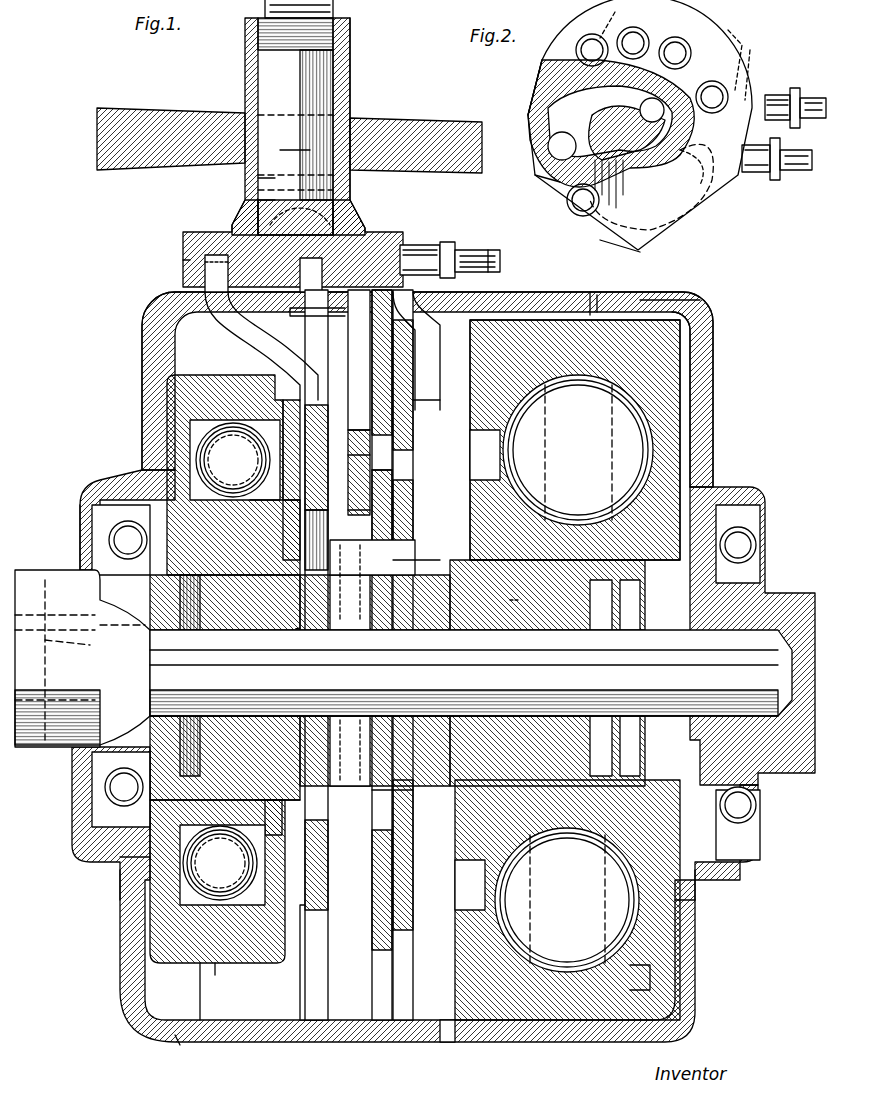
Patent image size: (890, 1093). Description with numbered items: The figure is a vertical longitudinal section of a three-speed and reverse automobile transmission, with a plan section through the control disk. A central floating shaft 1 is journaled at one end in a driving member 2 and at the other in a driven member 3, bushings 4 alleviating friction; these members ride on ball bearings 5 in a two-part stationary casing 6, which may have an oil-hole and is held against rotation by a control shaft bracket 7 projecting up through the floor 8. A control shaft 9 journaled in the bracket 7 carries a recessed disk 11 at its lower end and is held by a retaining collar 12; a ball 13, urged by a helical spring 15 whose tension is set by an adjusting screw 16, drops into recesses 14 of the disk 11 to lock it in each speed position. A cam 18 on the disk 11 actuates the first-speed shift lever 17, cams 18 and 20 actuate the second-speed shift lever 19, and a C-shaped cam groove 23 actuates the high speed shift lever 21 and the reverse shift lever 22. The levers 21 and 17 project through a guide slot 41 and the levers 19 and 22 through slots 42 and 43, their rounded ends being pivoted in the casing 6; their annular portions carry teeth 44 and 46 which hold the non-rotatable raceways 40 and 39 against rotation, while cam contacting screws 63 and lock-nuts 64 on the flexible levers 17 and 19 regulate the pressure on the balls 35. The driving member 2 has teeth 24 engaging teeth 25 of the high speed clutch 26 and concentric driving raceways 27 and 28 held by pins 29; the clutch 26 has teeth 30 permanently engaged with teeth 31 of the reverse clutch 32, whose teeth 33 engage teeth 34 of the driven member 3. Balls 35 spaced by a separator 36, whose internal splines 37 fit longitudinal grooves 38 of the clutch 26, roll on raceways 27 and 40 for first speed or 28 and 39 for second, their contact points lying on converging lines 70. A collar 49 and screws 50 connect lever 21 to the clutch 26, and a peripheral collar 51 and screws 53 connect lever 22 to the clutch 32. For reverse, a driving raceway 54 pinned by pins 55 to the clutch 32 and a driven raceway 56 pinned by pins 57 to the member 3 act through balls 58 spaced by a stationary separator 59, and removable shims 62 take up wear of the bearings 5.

In FIG. 1, the central floating shaft 1 is at (471, 673).
In FIG. 1, the driving member 2 is at (175, 252).
In FIG. 1, the driven member 3 is at (160, 400).
In FIG. 1, the bushings 4 is at (597, 265).
In FIG. 1, the ball bearings 5 is at (130, 485).
In FIG. 1, the two-part stationary casing 6 is at (145, 335).
In FIG. 1, the control shaft bracket 7 is at (350, 92).
In FIG. 1, the floor 8 is at (289, 130).
In FIG. 1, the control shaft 9 is at (270, 90).
In FIG. 1, the recessed disk 11 is at (183, 240).
In FIG. 2, the recessed disk 11 is at (725, 200).
In FIG. 1, the retaining collar 12 is at (352, 50).
In FIG. 1, the ball 13 is at (355, 215).
In FIG. 2, the recesses 14 is at (678, 37).
In FIG. 1, the helical spring 15 is at (240, 202).
In FIG. 1, the adjusting screw 16 is at (258, 180).
In FIG. 1, the first-speed shift lever 17 is at (462, 245).
In FIG. 2, the first-speed shift lever 17 is at (772, 95).
In FIG. 1, the cam 18 is at (405, 250).
In FIG. 2, the cam 18 is at (755, 90).
In FIG. 1, the second-speed shift lever 19 is at (428, 245).
In FIG. 2, the second-speed shift lever 19 is at (757, 175).
In FIG. 2, the cam 20 is at (620, 258).
In FIG. 1, the high speed shift lever 21 is at (370, 250).
In FIG. 2, the high speed shift lever 21 is at (560, 60).
In FIG. 1, the reverse shift lever 22 is at (195, 290).
In FIG. 2, the reverse shift lever 22 is at (545, 175).
In FIG. 1, the C-shaped cam groove 23 is at (360, 232).
In FIG. 2, the C-shaped cam groove 23 is at (550, 120).
In FIG. 1, the teeth 24 is at (698, 928).
In FIG. 1, the teeth 25 is at (547, 673).
In FIG. 1, the high speed clutch 26 is at (522, 628).
In FIG. 1, the driving ball raceway 27 is at (700, 897).
In FIG. 1, the driving ball raceway 28 is at (665, 300).
In FIG. 1, the pins 29 is at (700, 345).
In FIG. 1, the teeth 30 is at (352, 560).
In FIG. 1, the teeth 31 is at (280, 680).
In FIG. 1, the reverse clutch 32 is at (290, 820).
In FIG. 1, the teeth 33 is at (220, 640).
In FIG. 1, the teeth 34 is at (125, 860).
In FIG. 1, the balls 35 is at (640, 975).
In FIG. 1, the separator 36 is at (565, 915).
In FIG. 1, the internal splines 37 is at (560, 730).
In FIG. 1, the longitudinal grooves 38 is at (385, 820).
In FIG. 1, the non-rotatable raceway 39 is at (520, 490).
In FIG. 1, the non-rotatable raceway 40 is at (450, 1045).
In FIG. 1, the guide slot 41 is at (372, 315).
In FIG. 1, the slot 42 is at (435, 318).
In FIG. 1, the slot 43 is at (290, 325).
In FIG. 1, the teeth 44 is at (465, 650).
In FIG. 1, the teeth 46 is at (505, 690).
In FIG. 1, the collar 49 is at (400, 545).
In FIG. 1, the screws 50 is at (398, 670).
In FIG. 1, the peripheral collar 51 is at (280, 540).
In FIG. 1, the screws 53 is at (312, 672).
In FIG. 1, the driving ball raceway 54 is at (125, 885).
In FIG. 1, the pins 55 is at (232, 690).
In FIG. 1, the driven raceway 56 is at (245, 970).
In FIG. 1, the pins 57 is at (230, 375).
In FIG. 1, the balls 58 is at (195, 460).
In FIG. 1, the stationary separator 59 is at (305, 395).
In FIG. 1, the removable shims 62 is at (175, 1042).
In FIG. 1, the cam contacting screws 63 is at (500, 262).
In FIG. 2, the cam contacting screws 63 is at (818, 98).
In FIG. 1, the lock-nuts 64 is at (448, 240).
In FIG. 2, the lock-nuts 64 is at (798, 95).
In FIG. 1, the converging lines 70 is at (770, 548).